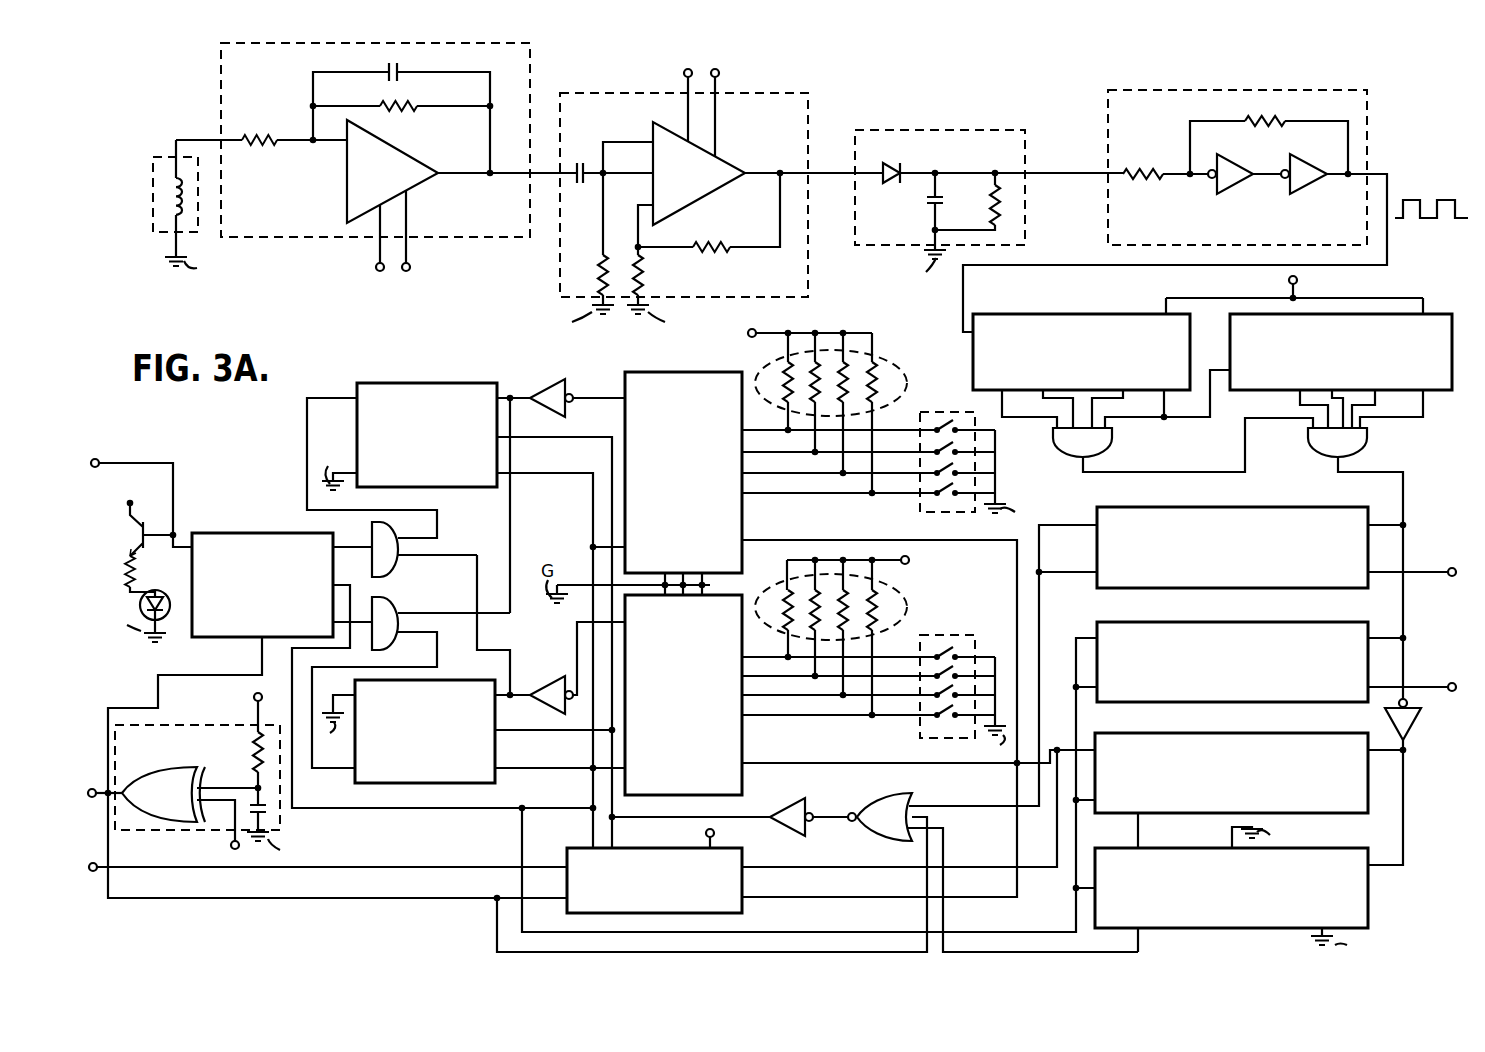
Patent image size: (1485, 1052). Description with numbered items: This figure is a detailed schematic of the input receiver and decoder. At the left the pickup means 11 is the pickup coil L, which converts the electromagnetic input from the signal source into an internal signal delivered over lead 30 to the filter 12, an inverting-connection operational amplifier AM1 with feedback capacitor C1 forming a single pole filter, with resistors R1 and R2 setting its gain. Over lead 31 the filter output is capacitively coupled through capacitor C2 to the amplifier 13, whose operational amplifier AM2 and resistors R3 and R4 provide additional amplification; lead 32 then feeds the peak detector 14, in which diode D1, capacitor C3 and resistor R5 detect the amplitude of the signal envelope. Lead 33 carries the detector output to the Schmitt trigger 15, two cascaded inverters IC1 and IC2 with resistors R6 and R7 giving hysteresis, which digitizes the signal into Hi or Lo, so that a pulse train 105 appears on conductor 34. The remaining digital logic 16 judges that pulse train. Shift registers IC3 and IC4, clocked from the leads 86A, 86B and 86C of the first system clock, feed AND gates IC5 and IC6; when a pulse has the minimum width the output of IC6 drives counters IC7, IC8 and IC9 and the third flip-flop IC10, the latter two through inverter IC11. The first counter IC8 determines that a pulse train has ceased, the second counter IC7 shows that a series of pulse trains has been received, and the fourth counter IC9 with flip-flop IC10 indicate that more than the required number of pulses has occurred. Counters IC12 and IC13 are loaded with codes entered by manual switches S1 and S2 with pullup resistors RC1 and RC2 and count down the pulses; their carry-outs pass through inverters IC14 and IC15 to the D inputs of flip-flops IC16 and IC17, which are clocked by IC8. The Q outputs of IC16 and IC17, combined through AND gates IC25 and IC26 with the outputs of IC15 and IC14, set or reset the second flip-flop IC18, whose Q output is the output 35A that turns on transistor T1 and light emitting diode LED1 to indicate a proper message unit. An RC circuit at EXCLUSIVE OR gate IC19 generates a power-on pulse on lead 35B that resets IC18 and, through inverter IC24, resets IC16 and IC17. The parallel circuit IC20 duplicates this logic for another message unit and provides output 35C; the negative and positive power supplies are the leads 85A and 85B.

The pickup means 11 is at (163, 195).
The filter 12 is at (375, 158).
The amplifier 13 is at (682, 193).
The peak detector 14 is at (989, 208).
The Schmitt trigger 15 is at (1175, 195).
The digital logic 16 is at (1450, 305).
The lead 30 is at (196, 140).
The lead 31 is at (546, 175).
The lead 32 is at (824, 172).
The lead 33 is at (1075, 140).
The conductor 34 is at (1387, 174).
The output 35A is at (107, 471).
The lead 35B is at (93, 785).
The output 35C is at (93, 872).
The negative power supply lead 85A is at (378, 270).
The positive power supply lead 85B is at (407, 271).
The clock input lead 86A is at (1298, 281).
The clock input lead 86B is at (1450, 683).
The clock input lead 86C is at (1450, 568).
The pulse train 105 is at (1397, 216).
The pickup coil L is at (170, 196).
The resistor R1 is at (280, 135).
The resistor R2 is at (410, 111).
The resistor R3 is at (600, 272).
The resistor R4 is at (645, 283).
The resistor R5 is at (712, 245).
The resistor R6 is at (1145, 180).
The resistor R7 is at (1270, 120).
The feedback capacitor C1 is at (397, 75).
The capacitor C2 is at (578, 160).
The capacitor C3 is at (928, 205).
The diode D1 is at (898, 165).
The operational amplifier AM1 is at (425, 185).
The operational amplifier AM2 is at (728, 148).
The inverter IC1 is at (1240, 192).
The inverter IC2 is at (1322, 192).
The shift register IC3 is at (1085, 312).
The shift register IC4 is at (1445, 390).
The AND gate IC5 is at (1112, 443).
The AND gate IC6 is at (1318, 455).
The second counter IC7 is at (1240, 590).
The first counter IC8 is at (1245, 703).
The fourth counter IC9 is at (1296, 814).
The third flip-flop IC10 is at (1265, 928).
The inverter IC11 is at (1412, 733).
The counter IC12 is at (705, 370).
The counter IC13 is at (742, 806).
The inverter IC14 is at (545, 381).
The inverter IC15 is at (548, 677).
The flip-flop IC16 is at (418, 383).
The flip-flop IC17 is at (478, 784).
The second flip-flop IC18 is at (272, 531).
The EXCLUSIVE OR gate IC19 is at (152, 771).
The parallel circuit IC20 is at (742, 913).
The inverter IC24 is at (808, 808).
The AND gate IC25 is at (398, 561).
The AND gate IC26 is at (398, 611).
The pullup resistors RC1 is at (892, 348).
The pullup resistors RC2 is at (905, 598).
The manual switch S1 is at (918, 507).
The manual switch S2 is at (918, 733).
The transistor T1 is at (141, 536).
The light emitting diode LED1 is at (172, 615).